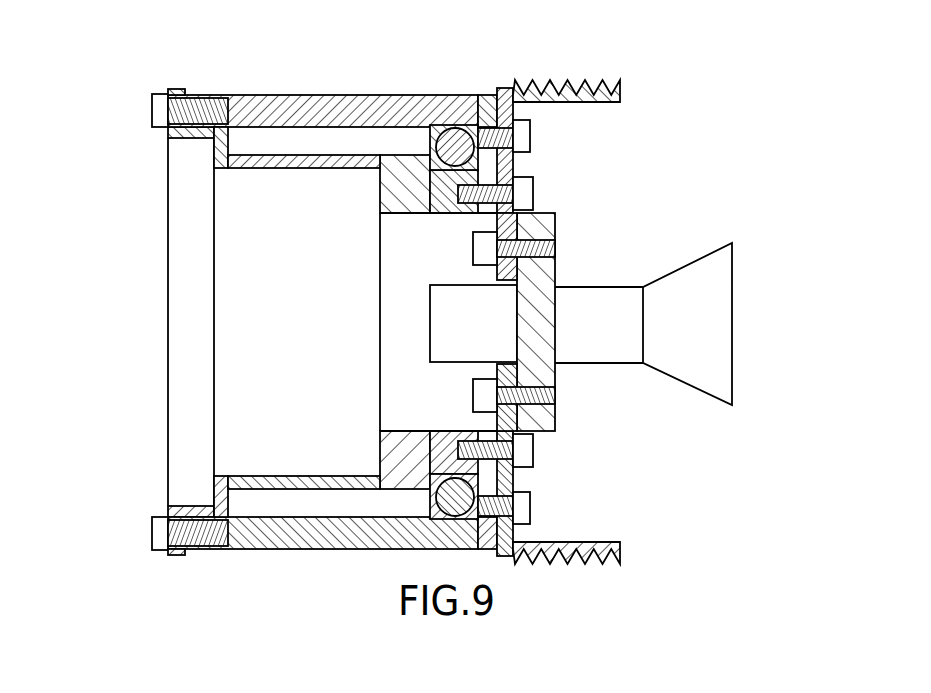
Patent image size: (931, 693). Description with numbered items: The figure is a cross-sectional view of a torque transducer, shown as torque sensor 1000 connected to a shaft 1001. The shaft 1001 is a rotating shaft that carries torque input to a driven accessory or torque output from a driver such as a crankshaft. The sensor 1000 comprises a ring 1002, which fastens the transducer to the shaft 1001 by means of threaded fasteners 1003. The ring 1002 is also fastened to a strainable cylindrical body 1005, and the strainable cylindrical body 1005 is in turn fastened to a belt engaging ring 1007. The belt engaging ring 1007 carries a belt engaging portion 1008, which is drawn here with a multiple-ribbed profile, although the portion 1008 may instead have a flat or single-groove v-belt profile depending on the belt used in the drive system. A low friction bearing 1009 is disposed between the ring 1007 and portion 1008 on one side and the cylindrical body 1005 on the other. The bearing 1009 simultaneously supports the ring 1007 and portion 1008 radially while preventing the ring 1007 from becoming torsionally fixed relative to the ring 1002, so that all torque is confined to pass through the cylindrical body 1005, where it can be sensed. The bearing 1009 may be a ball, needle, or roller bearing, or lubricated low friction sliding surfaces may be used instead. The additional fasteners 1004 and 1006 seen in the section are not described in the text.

The torque sensor 1000 is at (677, 102).
The shaft 1001 is at (557, 268).
The ring 1002 is at (497, 221).
The threaded fasteners 1003 is at (473, 248).
The bolt 1004 is at (535, 192).
The strainable cylindrical body 1005 is at (326, 169).
The bolt 1006 is at (152, 113).
The belt engaging ring 1007 is at (293, 96).
The belt engaging portion 1008 is at (565, 80).
The low friction bearing 1009 is at (478, 165).